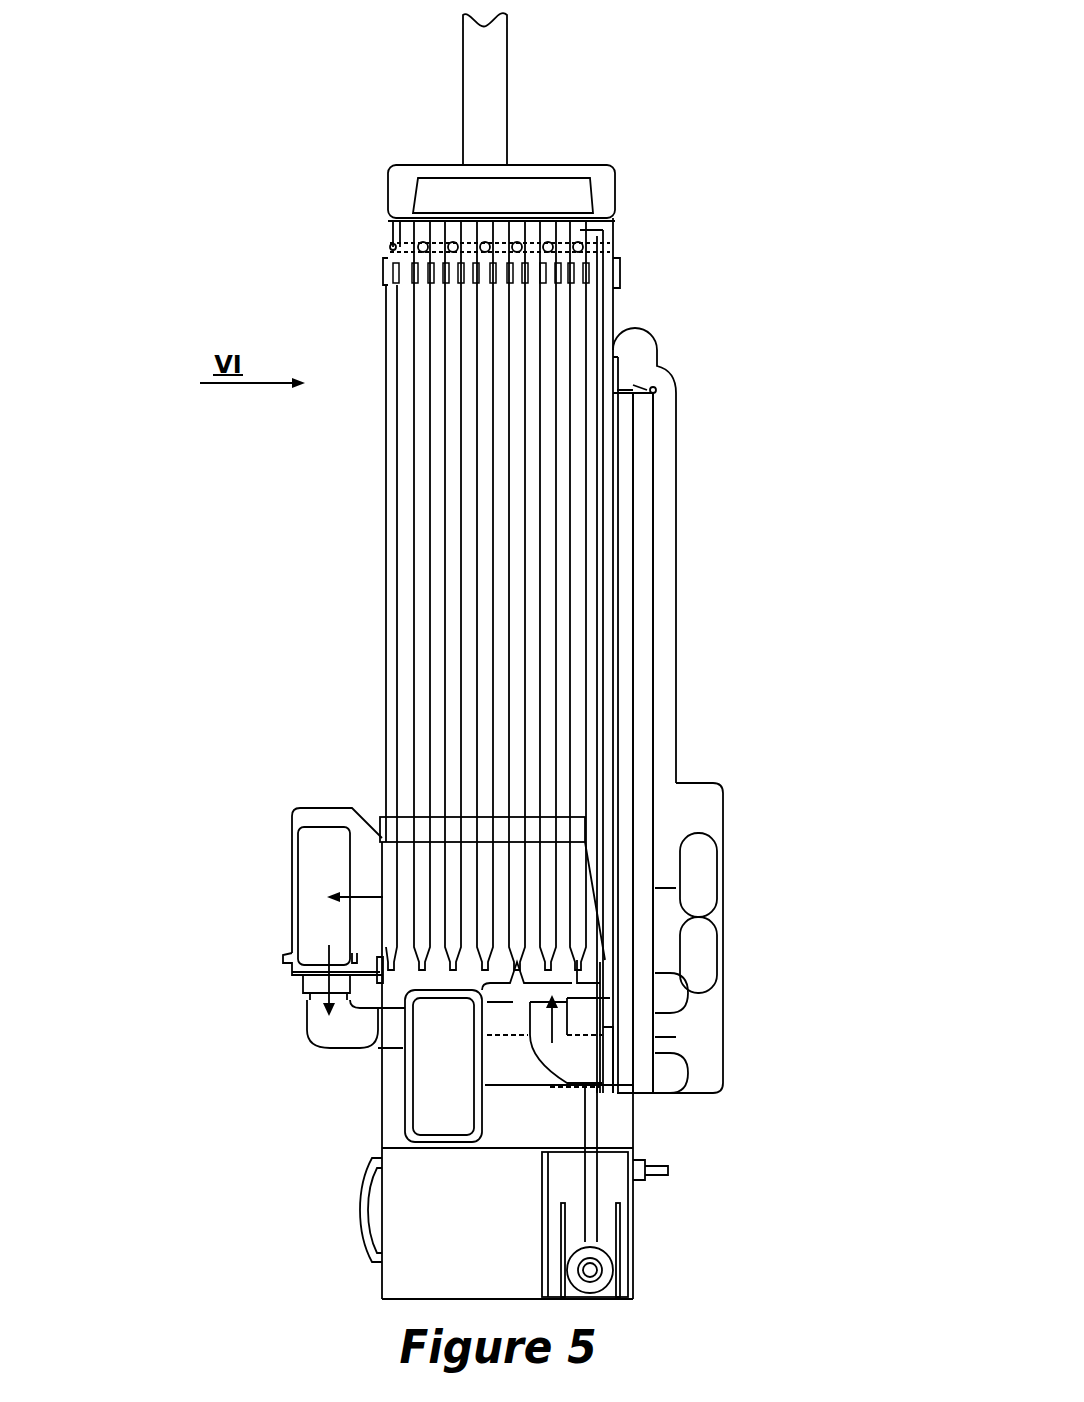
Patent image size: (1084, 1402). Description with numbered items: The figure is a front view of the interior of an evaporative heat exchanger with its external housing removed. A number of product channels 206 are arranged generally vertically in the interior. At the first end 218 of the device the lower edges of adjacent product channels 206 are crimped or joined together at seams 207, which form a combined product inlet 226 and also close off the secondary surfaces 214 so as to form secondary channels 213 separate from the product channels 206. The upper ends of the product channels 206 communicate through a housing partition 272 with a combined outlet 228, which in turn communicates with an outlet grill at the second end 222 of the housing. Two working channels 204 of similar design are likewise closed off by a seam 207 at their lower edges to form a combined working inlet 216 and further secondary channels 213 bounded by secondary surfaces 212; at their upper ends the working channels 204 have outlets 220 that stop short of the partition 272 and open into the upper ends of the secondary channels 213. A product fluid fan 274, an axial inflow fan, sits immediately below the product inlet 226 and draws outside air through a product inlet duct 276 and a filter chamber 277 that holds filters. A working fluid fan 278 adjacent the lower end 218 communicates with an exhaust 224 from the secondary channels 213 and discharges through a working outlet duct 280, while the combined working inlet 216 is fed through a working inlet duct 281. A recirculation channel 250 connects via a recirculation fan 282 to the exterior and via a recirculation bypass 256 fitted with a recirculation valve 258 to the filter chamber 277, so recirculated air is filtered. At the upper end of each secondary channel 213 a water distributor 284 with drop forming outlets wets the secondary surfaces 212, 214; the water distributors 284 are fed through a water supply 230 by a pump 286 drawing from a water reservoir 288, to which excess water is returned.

The working channels 204 is at (510, 596).
The product channels 206 is at (510, 596).
The seams 207 is at (423, 958).
The secondary surfaces 212 is at (543, 552).
The secondary channels 213 is at (417, 563).
The secondary surfaces 214 is at (425, 825).
The combined working inlet 216 is at (549, 992).
The first end 218 is at (510, 1224).
The outlets 220 is at (583, 232).
The second end 222 is at (615, 186).
The exhaust 224 is at (367, 868).
The combined product inlet 226 is at (510, 1033).
The combined outlet 228 is at (425, 193).
The water supply 230 is at (603, 737).
The recirculation channel 250 is at (657, 328).
The recirculation bypass 256 is at (642, 433).
The recirculation valve 258 is at (660, 373).
The housing partition 272 is at (410, 218).
The product fluid fan 274 is at (437, 1103).
The product inlet duct 276 is at (523, 1075).
The filter chamber 277 is at (640, 1065).
The working fluid fan 278 is at (320, 917).
The working outlet duct 280 is at (317, 1018).
The working inlet duct 281 is at (680, 1083).
The recirculation fan 282 is at (693, 810).
The water distributors 284 is at (393, 247).
The pump 286 is at (608, 1268).
The water reservoir 288 is at (420, 1208).